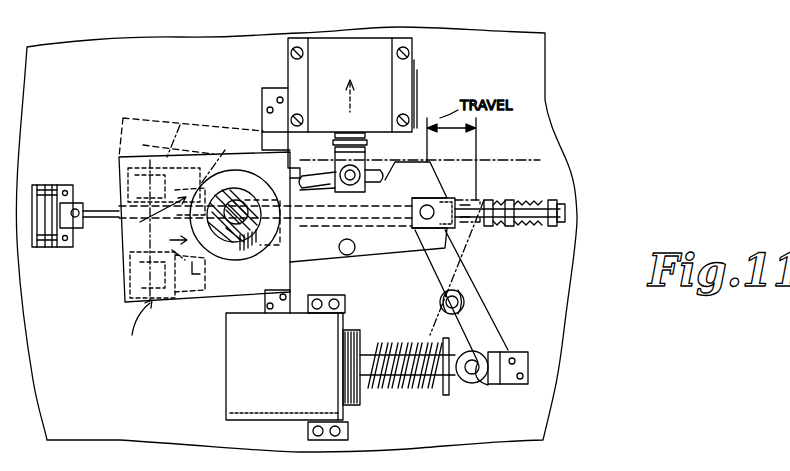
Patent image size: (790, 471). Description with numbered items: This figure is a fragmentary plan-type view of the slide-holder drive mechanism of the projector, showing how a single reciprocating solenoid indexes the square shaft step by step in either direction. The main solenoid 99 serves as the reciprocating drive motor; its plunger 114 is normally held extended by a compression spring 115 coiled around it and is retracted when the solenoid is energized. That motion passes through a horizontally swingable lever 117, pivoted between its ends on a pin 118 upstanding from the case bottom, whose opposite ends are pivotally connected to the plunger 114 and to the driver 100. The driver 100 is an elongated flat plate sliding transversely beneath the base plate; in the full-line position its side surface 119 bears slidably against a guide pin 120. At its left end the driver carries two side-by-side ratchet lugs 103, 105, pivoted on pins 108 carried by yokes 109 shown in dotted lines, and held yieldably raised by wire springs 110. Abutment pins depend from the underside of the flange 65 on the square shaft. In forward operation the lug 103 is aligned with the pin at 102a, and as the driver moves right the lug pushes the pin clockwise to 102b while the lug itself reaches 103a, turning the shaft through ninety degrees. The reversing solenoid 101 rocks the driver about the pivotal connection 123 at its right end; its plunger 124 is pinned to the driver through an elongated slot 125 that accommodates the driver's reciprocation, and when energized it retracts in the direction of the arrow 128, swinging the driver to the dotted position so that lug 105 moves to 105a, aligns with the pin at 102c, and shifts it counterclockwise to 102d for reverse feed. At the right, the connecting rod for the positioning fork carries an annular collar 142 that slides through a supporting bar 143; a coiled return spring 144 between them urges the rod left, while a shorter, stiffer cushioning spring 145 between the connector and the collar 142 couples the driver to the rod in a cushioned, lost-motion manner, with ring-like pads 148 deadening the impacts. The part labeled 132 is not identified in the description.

The reciprocating drive motor 99 is at (293, 365).
The second solenoid 101 is at (352, 85).
The flange 65 is at (284, 230).
The driver 100 is at (122, 326).
The abutment pin position 102a is at (282, 167).
The abutment pin position 102b is at (273, 134).
The abutment pin position 102c is at (236, 258).
The abutment pin position 102d is at (284, 244).
The ratchet lug 103 is at (151, 216).
The ratchet lug position 103a is at (341, 187).
The ratchet lug 105 is at (208, 279).
The ratchet lug position 105a is at (157, 245).
The pins 108 is at (143, 123).
The yokes 109 is at (118, 160).
The wire springs 110 is at (120, 190).
The plunger 114 is at (387, 392).
The compression spring 115 is at (434, 395).
The lever 117 is at (472, 332).
The pin 118 is at (466, 302).
The side surface 119 is at (368, 252).
The guide pin 120 is at (346, 256).
The pivotal connection 123 is at (440, 205).
The plunger 124 is at (350, 138).
The elongated slot 125 is at (348, 186).
The arrow 128 is at (365, 96).
The valve unit 132 is at (36, 186).
The annular collar 142 is at (530, 200).
The supporting bar 143 is at (560, 207).
The coiled spring 144 is at (545, 205).
The cushioning spring 145 is at (510, 224).
The ring-like pads 148 is at (478, 200).